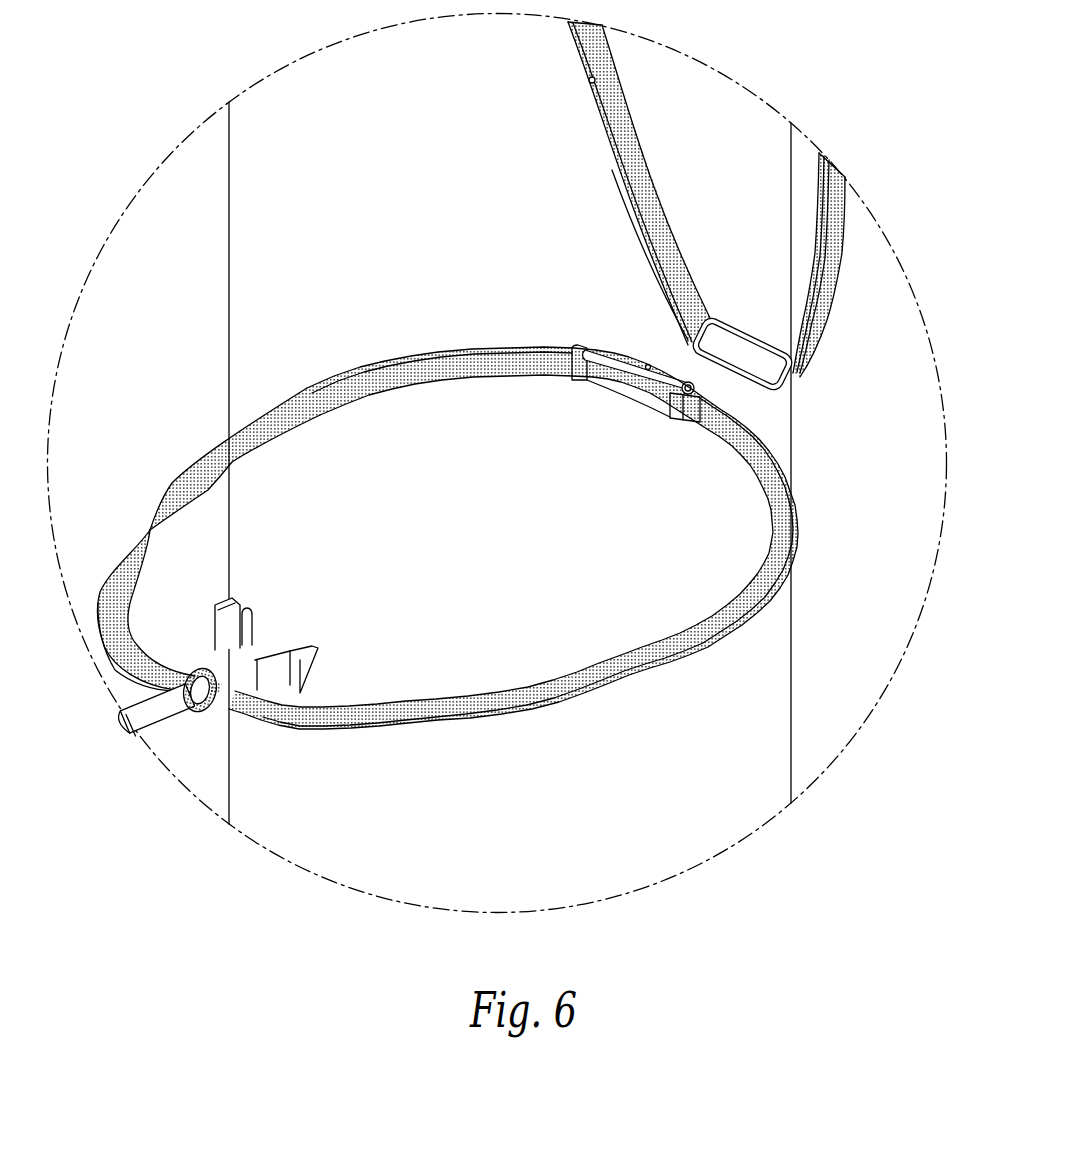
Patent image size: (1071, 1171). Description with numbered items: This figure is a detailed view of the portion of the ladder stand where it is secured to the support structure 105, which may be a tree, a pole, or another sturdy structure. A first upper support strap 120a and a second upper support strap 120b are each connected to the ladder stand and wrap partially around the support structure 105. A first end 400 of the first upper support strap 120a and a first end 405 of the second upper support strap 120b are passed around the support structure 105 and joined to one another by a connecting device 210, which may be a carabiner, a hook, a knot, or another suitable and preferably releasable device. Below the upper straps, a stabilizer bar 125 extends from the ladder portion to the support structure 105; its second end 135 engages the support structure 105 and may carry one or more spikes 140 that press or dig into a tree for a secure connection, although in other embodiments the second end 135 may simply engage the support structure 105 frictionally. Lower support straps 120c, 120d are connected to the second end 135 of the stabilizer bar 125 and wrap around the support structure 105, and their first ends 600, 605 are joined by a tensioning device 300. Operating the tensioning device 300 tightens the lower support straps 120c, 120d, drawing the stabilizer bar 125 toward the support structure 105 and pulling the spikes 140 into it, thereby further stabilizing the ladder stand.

The support structure 105 is at (265, 113).
The first upper support strap 120a is at (588, 78).
The second upper support strap 120b is at (830, 240).
The lower support strap 120c is at (197, 463).
The lower support strap 120d is at (525, 683).
The stabilizer bar 125 is at (163, 717).
The second end 135 is at (137, 707).
The spikes 140 is at (235, 600).
The connecting device 210 is at (740, 323).
The tensioning device 300 is at (600, 380).
The first end 400 is at (667, 277).
The first end 405 is at (817, 317).
The first end 600 is at (455, 355).
The first end 605 is at (733, 437).